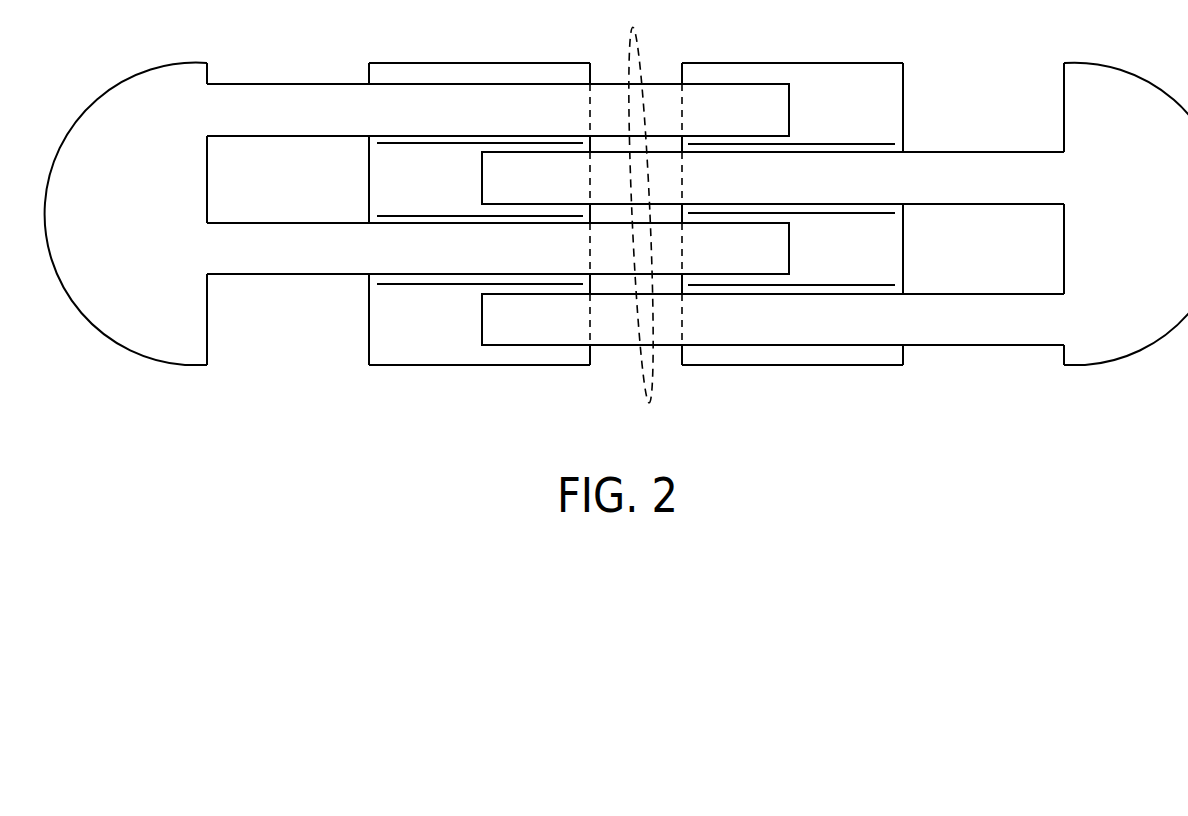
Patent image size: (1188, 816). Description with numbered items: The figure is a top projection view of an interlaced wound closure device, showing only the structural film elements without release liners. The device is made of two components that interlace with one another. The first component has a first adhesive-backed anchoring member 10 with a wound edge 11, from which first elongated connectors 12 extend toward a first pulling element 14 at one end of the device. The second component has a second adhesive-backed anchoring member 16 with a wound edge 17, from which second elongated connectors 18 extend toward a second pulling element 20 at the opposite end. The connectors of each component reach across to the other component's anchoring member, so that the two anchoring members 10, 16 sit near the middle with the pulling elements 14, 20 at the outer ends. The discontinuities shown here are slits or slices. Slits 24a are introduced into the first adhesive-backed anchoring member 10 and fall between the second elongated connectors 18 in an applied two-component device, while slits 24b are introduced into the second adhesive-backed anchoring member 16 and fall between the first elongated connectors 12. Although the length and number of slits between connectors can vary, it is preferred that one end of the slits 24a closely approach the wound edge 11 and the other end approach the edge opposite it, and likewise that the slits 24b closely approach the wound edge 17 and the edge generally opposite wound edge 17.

The first adhesive-backed anchoring member 10 is at (790, 358).
The wound edge 11 is at (682, 367).
The first elongated connectors 12 is at (496, 123).
The first pulling element 14 is at (184, 352).
The second adhesive-backed anchoring member 16 is at (478, 357).
The wound edge 17 is at (590, 367).
The second elongated connectors 18 is at (808, 191).
The second pulling element 20 is at (1090, 352).
The slits 24a is at (822, 143).
The slits 24b is at (470, 215).